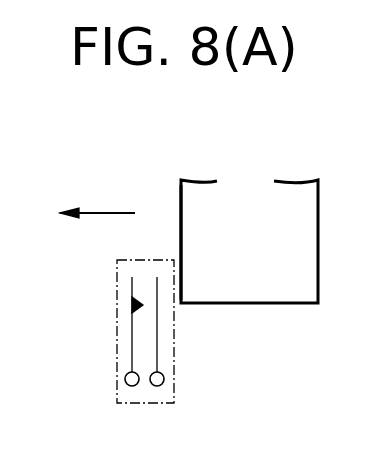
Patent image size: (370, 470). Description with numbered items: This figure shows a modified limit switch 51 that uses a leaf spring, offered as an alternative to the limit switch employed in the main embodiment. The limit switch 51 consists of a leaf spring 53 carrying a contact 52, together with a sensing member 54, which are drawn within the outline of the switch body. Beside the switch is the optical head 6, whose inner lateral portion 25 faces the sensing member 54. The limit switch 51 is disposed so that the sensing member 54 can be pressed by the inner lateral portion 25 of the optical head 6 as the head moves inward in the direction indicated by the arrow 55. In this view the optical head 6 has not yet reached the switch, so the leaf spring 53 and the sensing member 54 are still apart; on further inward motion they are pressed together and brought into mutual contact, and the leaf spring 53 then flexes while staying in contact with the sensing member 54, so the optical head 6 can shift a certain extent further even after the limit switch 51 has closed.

The optical head 6 is at (263, 218).
The inner lateral portion 25 is at (181, 212).
The arrow 55 is at (105, 211).
The limit switch 51 is at (118, 271).
The contact 52 is at (138, 297).
The leaf spring 53 is at (131, 347).
The sensing member 54 is at (160, 342).